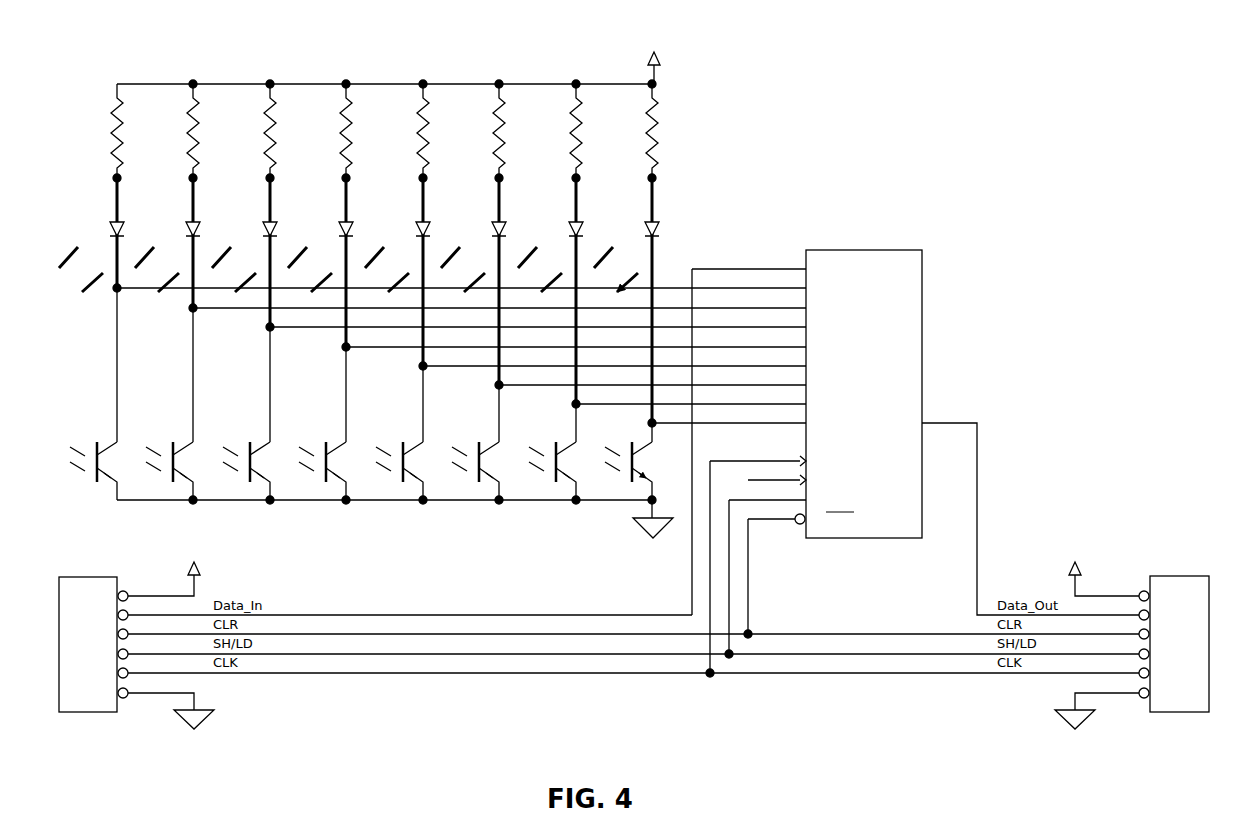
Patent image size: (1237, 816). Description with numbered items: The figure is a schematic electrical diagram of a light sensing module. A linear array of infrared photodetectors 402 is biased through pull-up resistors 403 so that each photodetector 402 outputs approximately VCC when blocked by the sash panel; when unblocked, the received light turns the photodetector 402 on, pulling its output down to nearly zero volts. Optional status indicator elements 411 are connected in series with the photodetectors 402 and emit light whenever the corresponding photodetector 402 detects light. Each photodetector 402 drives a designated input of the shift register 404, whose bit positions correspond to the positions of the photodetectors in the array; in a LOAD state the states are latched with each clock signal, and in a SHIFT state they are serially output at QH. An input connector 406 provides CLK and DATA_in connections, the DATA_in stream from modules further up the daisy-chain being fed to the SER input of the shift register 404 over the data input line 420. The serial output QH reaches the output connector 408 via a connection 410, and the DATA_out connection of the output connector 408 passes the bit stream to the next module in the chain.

The photodetectors 402 is at (78, 523).
The pull-up resistors 403 is at (705, 136).
The shift register 404 is at (864, 329).
The input connector 406 is at (97, 720).
The output connector 408 is at (1168, 720).
The connection 410 is at (978, 495).
The status indicator elements 411 is at (327, 231).
The serial data input line 420 is at (572, 613).